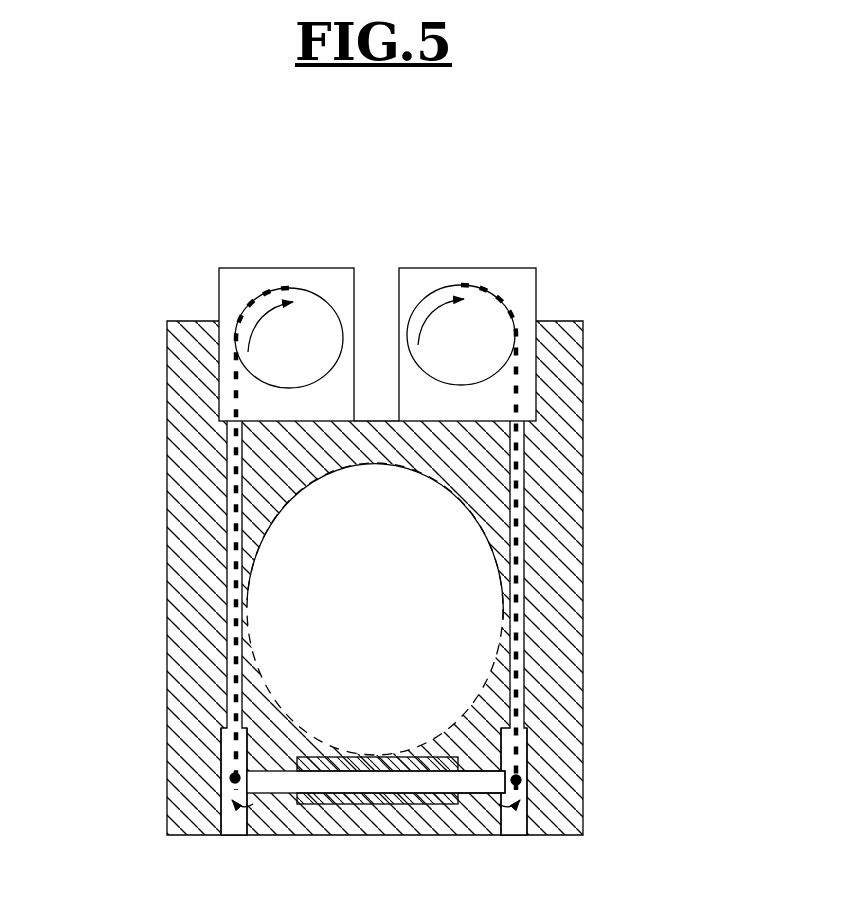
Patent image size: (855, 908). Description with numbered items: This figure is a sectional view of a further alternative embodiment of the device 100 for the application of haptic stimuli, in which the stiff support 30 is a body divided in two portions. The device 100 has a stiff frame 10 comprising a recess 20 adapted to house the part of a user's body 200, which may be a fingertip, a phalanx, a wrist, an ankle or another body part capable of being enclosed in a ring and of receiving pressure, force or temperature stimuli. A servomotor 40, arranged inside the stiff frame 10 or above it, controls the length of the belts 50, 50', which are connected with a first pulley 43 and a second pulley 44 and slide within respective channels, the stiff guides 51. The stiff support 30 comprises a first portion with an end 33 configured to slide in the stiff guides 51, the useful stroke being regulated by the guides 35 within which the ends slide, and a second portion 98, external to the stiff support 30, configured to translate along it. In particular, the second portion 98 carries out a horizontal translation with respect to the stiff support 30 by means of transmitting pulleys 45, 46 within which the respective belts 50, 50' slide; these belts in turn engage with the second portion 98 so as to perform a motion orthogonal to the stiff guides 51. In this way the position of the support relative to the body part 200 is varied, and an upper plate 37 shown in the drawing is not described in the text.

The device 100 is at (396, 554).
The stiff frame 10 is at (167, 342).
The recess 20 is at (272, 732).
The stiff support 30 is at (390, 787).
The end 33 is at (583, 788).
The guides 35 is at (232, 830).
The upper plate 37 is at (340, 793).
The servomotor 40 is at (216, 276).
The first pulley 43 is at (313, 303).
The second pulley 44 is at (438, 290).
The transmitting pulley 45 is at (522, 780).
The transmitting pulley 46 is at (233, 764).
The belt 50 is at (546, 537).
The belt 50' is at (198, 539).
The stiff guides 51 is at (223, 528).
The second portion 98 is at (442, 804).
The part of a user's body 200 is at (450, 632).